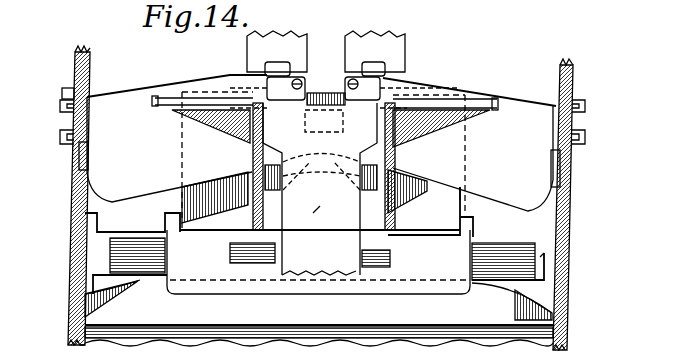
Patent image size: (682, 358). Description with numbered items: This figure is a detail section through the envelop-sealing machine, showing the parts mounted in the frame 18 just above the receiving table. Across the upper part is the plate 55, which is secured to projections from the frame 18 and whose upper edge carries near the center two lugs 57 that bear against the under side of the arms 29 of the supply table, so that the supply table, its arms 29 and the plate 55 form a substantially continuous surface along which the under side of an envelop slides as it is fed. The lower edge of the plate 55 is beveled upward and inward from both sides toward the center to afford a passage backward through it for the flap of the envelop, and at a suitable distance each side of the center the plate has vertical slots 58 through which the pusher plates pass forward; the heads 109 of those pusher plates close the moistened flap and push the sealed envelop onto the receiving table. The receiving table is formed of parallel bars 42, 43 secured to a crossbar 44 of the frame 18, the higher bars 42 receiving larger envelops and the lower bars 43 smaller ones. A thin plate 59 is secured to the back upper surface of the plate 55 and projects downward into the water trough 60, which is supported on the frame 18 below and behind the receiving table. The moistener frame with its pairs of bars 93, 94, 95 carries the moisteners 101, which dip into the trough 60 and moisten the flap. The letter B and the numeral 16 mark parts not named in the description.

The frame 18 is at (70, 272).
The plate 55 is at (118, 150).
The lugs 57 is at (267, 70).
The arms 29 is at (367, 43).
The moisteners 101 is at (166, 108).
The bars 95 is at (161, 116).
The bars 93 is at (494, 98).
The bars 94 is at (382, 97).
The vertical slots 58 is at (252, 158).
The heads 109 is at (360, 203).
The bars 42 is at (173, 212).
The corner B is at (466, 200).
The bars 43 is at (240, 232).
The thin plate 59 is at (313, 213).
The base plate 16 is at (416, 296).
The water trough 60 is at (517, 316).
The crossbar 44 is at (540, 257).